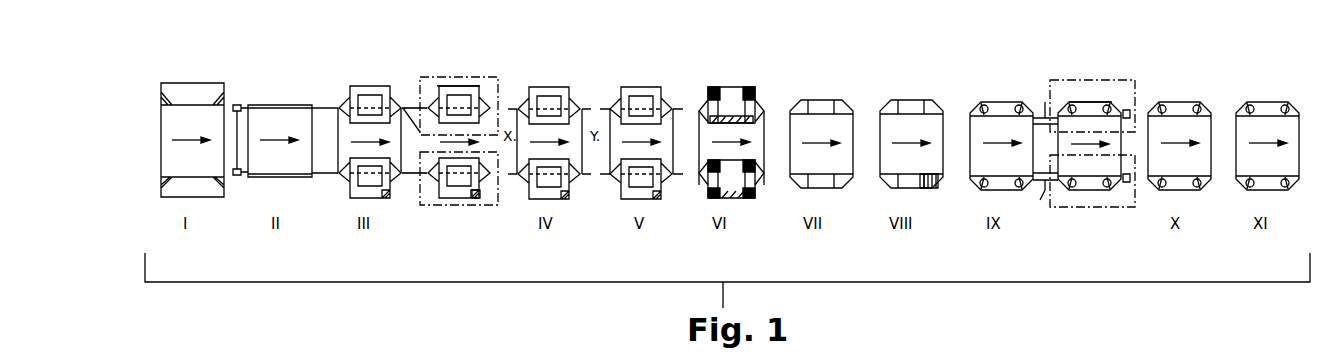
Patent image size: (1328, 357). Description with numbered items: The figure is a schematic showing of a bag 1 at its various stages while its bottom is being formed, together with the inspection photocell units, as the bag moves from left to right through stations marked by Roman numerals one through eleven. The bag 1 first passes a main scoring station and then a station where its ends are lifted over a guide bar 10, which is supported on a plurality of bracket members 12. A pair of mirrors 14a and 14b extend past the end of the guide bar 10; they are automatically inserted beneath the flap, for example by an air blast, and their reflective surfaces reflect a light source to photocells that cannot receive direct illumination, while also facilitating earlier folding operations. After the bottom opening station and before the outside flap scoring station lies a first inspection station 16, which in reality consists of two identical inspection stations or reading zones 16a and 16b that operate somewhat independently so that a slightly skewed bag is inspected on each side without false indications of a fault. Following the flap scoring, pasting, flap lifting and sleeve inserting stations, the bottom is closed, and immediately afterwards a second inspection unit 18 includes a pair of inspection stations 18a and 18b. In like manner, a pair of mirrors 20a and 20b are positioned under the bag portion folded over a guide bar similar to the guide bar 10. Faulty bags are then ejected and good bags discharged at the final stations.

The bag 1 is at (152, 117).
The guide bar 10 is at (324, 118).
The bracket members 12 is at (238, 104).
The mirror 14a is at (405, 176).
The mirror 14b is at (418, 122).
The first inspection station 16 is at (463, 172).
The inspection station 16a is at (497, 190).
The inspection station 16b is at (466, 84).
The second inspection unit 18 is at (1088, 174).
The inspection station 18a is at (1137, 200).
The inspection station 18b is at (1108, 80).
The mirror 20a is at (1036, 182).
The mirror 20b is at (1045, 110).